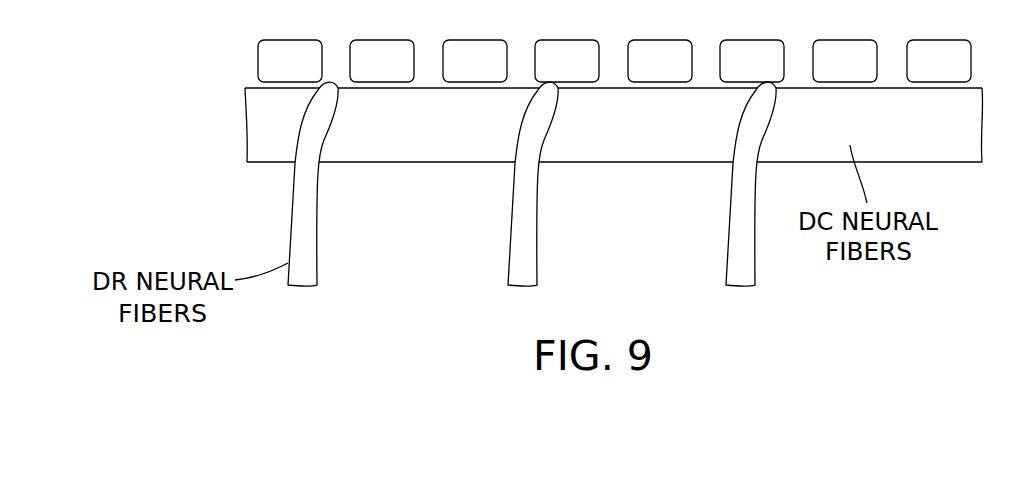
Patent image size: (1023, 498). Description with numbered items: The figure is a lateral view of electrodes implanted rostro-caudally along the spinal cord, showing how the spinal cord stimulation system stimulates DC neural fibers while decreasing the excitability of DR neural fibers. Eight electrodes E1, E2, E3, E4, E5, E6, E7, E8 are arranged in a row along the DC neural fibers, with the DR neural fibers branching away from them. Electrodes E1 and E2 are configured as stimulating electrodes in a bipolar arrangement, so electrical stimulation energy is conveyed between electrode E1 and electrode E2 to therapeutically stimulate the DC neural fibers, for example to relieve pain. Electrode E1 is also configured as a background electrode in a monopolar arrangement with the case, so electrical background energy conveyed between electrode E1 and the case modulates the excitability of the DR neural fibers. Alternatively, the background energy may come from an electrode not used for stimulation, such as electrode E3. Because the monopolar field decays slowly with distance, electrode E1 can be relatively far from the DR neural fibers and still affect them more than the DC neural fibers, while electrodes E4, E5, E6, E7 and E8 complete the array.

The electrode E1 is at (290, 61).
The electrode E2 is at (382, 61).
The electrode E3 is at (475, 61).
The electrode E4 is at (567, 61).
The electrode E5 is at (660, 61).
The electrode E6 is at (752, 61).
The electrode E7 is at (845, 61).
The electrode E8 is at (939, 61).